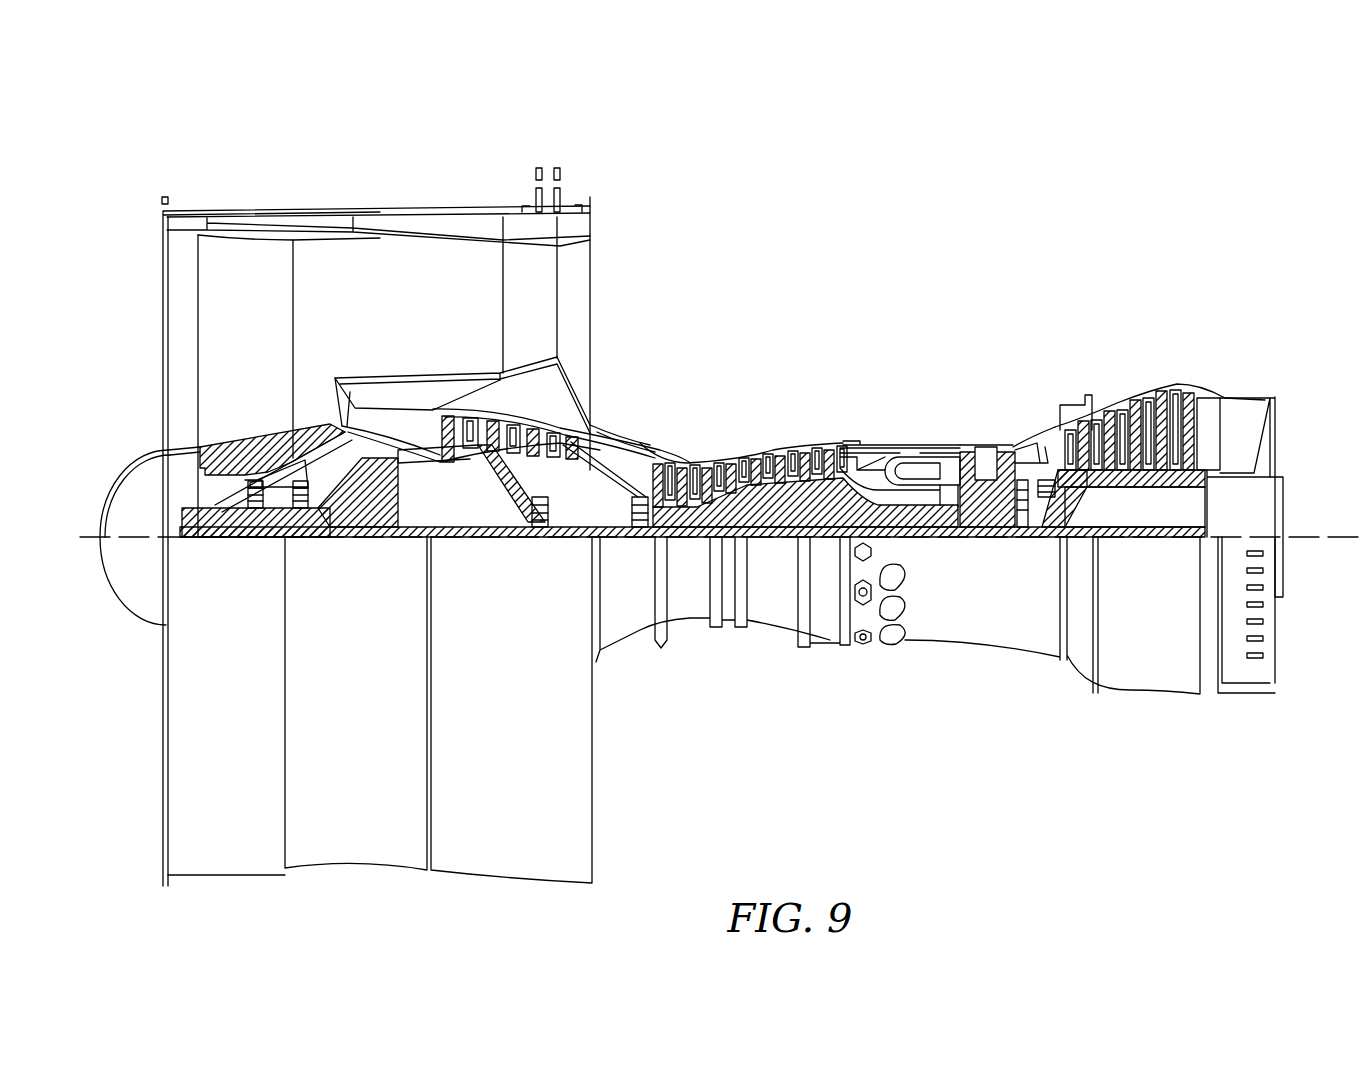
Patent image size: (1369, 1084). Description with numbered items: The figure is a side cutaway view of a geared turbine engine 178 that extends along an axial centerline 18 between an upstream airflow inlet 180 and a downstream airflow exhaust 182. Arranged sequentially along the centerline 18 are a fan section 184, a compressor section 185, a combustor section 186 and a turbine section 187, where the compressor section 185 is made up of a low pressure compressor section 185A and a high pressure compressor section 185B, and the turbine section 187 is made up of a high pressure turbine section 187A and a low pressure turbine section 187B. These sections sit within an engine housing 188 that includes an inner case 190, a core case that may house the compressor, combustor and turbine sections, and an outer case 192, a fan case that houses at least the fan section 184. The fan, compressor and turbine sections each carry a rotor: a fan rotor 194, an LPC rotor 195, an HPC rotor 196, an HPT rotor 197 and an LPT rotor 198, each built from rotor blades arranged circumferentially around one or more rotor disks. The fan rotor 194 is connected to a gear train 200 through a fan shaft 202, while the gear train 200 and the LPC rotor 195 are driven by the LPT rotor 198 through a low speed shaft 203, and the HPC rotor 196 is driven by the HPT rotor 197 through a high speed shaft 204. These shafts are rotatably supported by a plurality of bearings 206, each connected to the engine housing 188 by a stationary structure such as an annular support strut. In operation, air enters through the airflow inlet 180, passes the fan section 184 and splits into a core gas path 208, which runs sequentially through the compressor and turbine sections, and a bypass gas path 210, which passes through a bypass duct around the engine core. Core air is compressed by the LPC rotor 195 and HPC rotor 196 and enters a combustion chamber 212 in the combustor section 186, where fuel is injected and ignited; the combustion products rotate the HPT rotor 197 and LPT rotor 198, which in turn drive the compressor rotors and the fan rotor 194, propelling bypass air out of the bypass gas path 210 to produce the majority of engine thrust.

The axial centerline 18 is at (1338, 540).
The geared turbine engine 178 is at (128, 184).
The airflow inlet 180 is at (163, 287).
The airflow exhaust 182 is at (1272, 430).
The fan section 184 is at (340, 179).
The compressor section 185 is at (418, 116).
The low pressure compressor section 185A is at (595, 168).
The high pressure compressor section 185B is at (618, 366).
The combustor section 186 is at (960, 366).
The turbine section 187 is at (1232, 292).
The high pressure turbine section 187A is at (1045, 366).
The low pressure turbine section 187B is at (1232, 366).
The engine housing 188 is at (622, 665).
The inner case 190 is at (825, 645).
The outer case 192 is at (546, 883).
The fan rotor 194 is at (172, 456).
The LPC rotor 195 is at (497, 483).
The HPC rotor 196 is at (765, 492).
The HPT rotor 197 is at (985, 510).
The LPT rotor 198 is at (1135, 487).
The gear train 200 is at (378, 540).
The fan shaft 202 is at (235, 538).
The low speed shaft 203 is at (1150, 538).
The high speed shaft 204 is at (915, 515).
The bearings 206 is at (297, 508).
The core gas path 208 is at (616, 456).
The bypass gas path 210 is at (426, 312).
The combustion chamber 212 is at (905, 470).